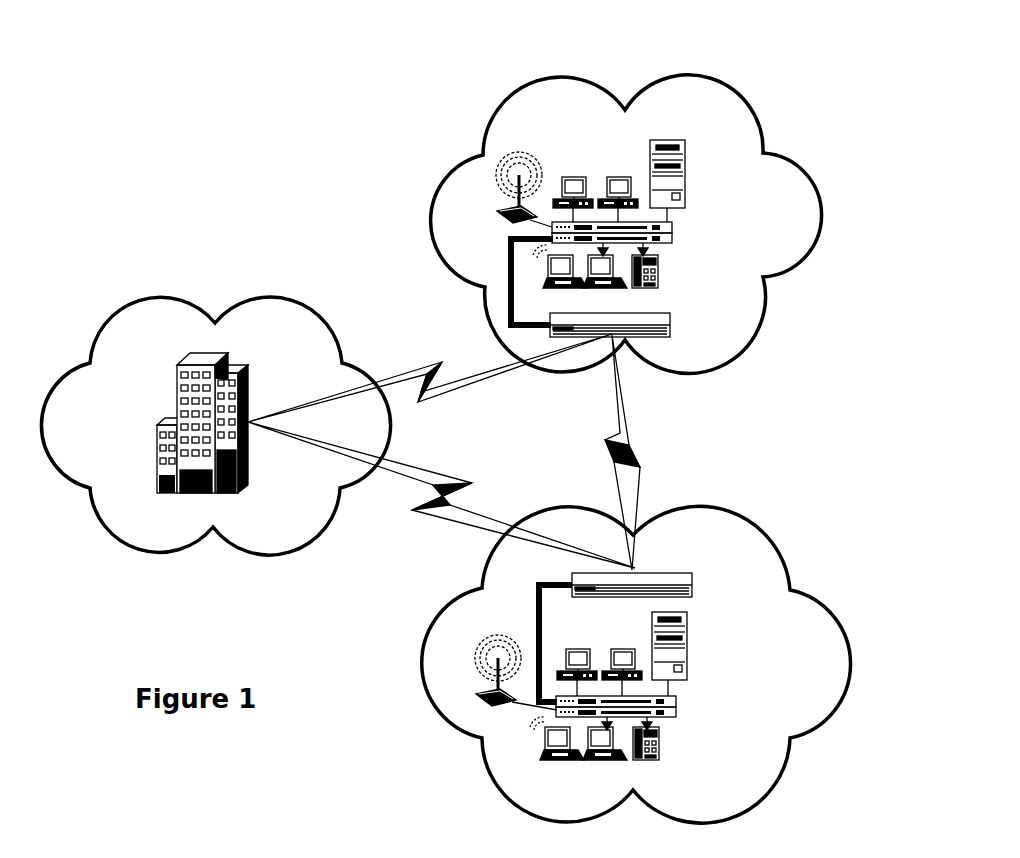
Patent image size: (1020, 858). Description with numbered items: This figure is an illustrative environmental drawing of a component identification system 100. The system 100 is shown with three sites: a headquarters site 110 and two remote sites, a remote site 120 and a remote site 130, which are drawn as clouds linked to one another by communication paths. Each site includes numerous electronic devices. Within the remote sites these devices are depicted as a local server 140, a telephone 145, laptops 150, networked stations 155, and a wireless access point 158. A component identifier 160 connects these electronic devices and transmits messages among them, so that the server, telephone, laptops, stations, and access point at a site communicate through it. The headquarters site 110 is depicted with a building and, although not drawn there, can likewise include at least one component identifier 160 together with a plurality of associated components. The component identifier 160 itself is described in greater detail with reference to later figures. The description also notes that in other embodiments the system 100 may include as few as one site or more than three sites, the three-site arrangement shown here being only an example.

The component identification system 100 is at (851, 63).
The headquarters site 110 is at (210, 285).
The remote site 120 is at (774, 115).
The remote site 130 is at (770, 528).
The local server 140 is at (685, 152).
The telephone 145 is at (670, 323).
The laptops 150 is at (543, 287).
The networked stations 155 is at (587, 177).
The wireless access point 158 is at (524, 179).
The component identifier 160 is at (676, 694).